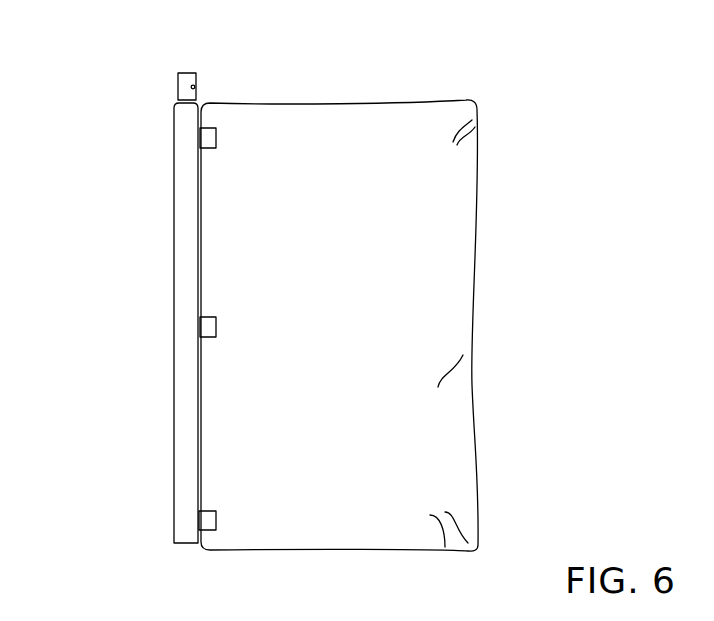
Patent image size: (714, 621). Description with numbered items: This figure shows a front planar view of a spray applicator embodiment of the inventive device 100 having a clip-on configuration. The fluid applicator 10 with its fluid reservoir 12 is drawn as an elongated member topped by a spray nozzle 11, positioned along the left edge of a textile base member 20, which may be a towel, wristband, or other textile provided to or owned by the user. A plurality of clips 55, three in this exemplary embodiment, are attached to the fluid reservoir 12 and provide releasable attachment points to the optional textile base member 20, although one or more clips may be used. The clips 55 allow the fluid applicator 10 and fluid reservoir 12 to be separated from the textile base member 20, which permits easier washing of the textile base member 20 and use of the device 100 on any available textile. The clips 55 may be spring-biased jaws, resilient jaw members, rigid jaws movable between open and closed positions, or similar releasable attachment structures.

The inventive device 100 is at (573, 93).
The fluid applicator 10 is at (133, 78).
The spray nozzle 11 is at (183, 82).
The fluid reservoir 12 is at (182, 422).
The textile base member 20 is at (452, 282).
The clips 55 is at (210, 135).